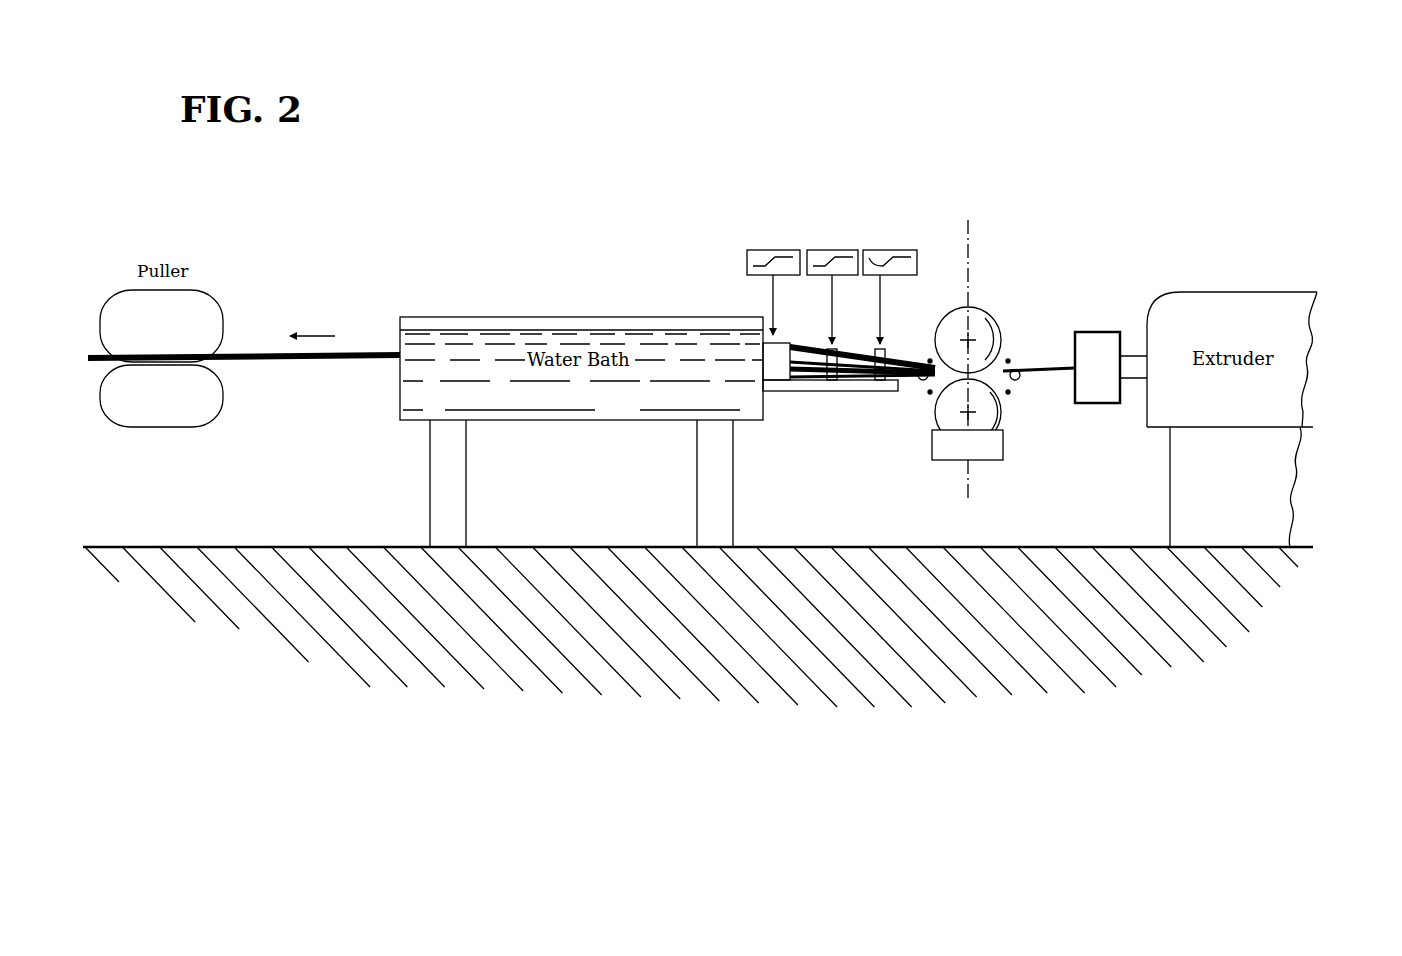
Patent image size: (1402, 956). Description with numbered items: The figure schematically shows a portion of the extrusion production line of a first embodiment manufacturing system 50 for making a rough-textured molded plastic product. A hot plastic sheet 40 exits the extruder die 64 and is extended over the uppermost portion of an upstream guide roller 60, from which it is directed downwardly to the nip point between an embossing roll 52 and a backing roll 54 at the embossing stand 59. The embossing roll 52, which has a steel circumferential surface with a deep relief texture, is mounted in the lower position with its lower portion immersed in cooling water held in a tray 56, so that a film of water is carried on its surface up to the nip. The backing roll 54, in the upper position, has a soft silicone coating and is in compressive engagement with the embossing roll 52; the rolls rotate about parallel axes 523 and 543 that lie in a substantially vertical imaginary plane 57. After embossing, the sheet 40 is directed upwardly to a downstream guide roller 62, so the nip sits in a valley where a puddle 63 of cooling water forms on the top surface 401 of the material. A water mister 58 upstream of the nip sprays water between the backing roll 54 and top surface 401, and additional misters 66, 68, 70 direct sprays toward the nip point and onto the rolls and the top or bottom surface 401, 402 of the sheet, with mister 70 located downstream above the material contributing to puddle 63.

The hot plastic sheet 40 is at (314, 370).
The top surface 401 is at (356, 347).
The bottom surface 402 is at (359, 368).
The manufacturing system 50 is at (645, 186).
The embossing roll 52 is at (1002, 438).
The axis of rotation 523 is at (975, 418).
The backing roll 54 is at (948, 308).
The axis of rotation 543 is at (974, 338).
The tray 56 is at (940, 466).
The vertical imaginary plane 57 is at (970, 233).
The water mister 58 is at (1015, 357).
The embossing stand 59 is at (972, 196).
The upstream guide roller 60 is at (1012, 386).
The downstream guide roller 62 is at (921, 391).
The puddle 63 is at (1008, 352).
The extruder die 64 is at (1099, 338).
The water mister 66 is at (1014, 404).
The water mister 68 is at (928, 400).
The water mister 70 is at (921, 355).